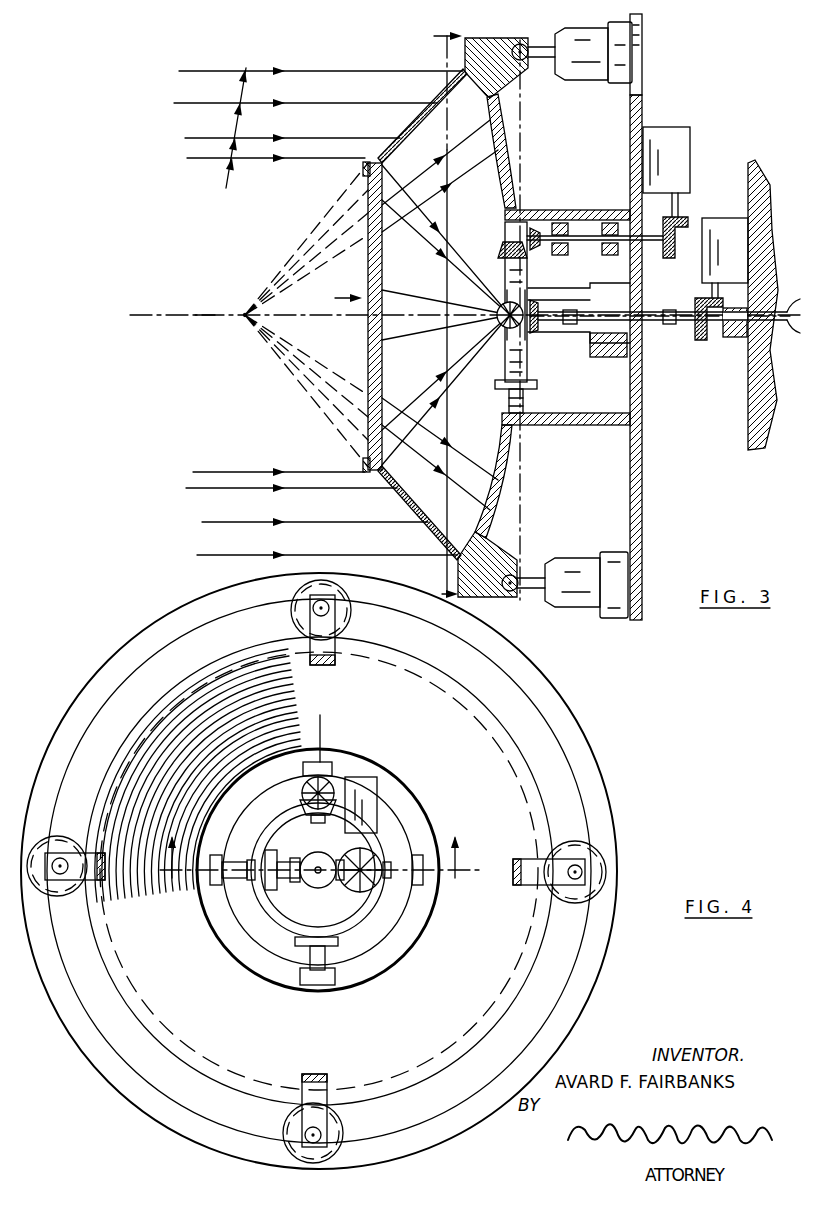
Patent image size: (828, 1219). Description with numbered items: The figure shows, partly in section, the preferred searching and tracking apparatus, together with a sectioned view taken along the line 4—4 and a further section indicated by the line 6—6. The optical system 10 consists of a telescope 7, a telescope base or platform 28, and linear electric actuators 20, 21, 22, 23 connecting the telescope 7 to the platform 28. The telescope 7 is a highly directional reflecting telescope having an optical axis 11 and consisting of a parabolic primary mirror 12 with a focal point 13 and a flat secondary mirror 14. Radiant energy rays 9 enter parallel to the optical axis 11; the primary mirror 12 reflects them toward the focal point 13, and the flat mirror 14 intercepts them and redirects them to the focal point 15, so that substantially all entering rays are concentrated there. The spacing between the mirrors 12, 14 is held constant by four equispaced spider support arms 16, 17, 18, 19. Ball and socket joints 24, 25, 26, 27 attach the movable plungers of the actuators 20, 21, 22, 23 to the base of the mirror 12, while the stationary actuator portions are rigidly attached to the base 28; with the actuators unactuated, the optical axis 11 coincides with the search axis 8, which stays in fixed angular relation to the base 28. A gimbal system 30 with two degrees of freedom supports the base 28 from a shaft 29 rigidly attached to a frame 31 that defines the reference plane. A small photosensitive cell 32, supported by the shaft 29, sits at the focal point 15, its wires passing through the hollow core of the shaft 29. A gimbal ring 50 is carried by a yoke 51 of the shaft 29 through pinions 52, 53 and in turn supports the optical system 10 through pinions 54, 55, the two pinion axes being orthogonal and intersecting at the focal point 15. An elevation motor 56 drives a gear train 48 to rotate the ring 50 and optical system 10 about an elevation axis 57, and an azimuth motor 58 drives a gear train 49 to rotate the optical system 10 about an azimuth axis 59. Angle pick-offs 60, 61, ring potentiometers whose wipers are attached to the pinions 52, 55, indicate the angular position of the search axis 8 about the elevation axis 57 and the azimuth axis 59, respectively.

In FIG. 3, the section line 4— 4 is at (422, 47).
In FIG. 4, the section line 6— 6 is at (177, 896).
In FIG. 3, the telescope 7 is at (338, 298).
In FIG. 3, the search axis 8 is at (149, 311).
In FIG. 3, the radiant energy rays 9 is at (318, 313).
In FIG. 3, the optical system 10 is at (508, 506).
In FIG. 3, the optical axis 11 is at (205, 321).
In FIG. 3, the parabolic primary mirror 12 is at (511, 468).
In FIG. 4, the parabolic primary mirror 12 is at (486, 797).
In FIG. 3, the focal point 13 is at (243, 311).
In FIG. 3, the flat secondary mirror 14 is at (385, 306).
In FIG. 3, the focal point 15 is at (539, 300).
In FIG. 4, the focal point 15 is at (322, 862).
In FIG. 3, the spider support arm 16 is at (446, 96).
In FIG. 4, the spider support arm 16 is at (332, 660).
In FIG. 4, the spider support arm 17 is at (101, 885).
In FIG. 3, the spider support arm 18 is at (434, 545).
In FIG. 4, the spider support arm 18 is at (322, 1085).
In FIG. 4, the spider support arm 19 is at (520, 884).
In FIG. 3, the linear electric actuator 20 is at (600, 76).
In FIG. 4, the linear electric actuator 20 is at (298, 599).
In FIG. 4, the linear electric actuator 21 is at (50, 832).
In FIG. 3, the linear electric actuator 22 is at (590, 606).
In FIG. 4, the linear electric actuator 22 is at (340, 1152).
In FIG. 4, the linear electric actuator 23 is at (603, 858).
In FIG. 3, the ball and socket joint 24 is at (518, 43).
In FIG. 4, the ball and socket joint 24 is at (331, 608).
In FIG. 4, the ball and socket joint 25 is at (48, 888).
In FIG. 3, the ball and socket joint 26 is at (512, 592).
In FIG. 4, the ball and socket joint 26 is at (325, 1138).
In FIG. 4, the ball and socket joint 27 is at (586, 878).
In FIG. 3, the telescope base 28 is at (644, 100).
In FIG. 4, the telescope base 28 is at (598, 970).
In FIG. 3, the shaft 29 is at (655, 308).
In FIG. 4, the shaft 29 is at (330, 884).
In FIG. 3, the gimbal system 30 is at (540, 363).
In FIG. 4, the gimbal system 30 is at (396, 925).
In FIG. 3, the frame 31 is at (760, 164).
In FIG. 3, the photosensitive cell 32 is at (499, 319).
In FIG. 4, the photosensitive cell 32 is at (312, 880).
In FIG. 3, the gear train 48 is at (709, 358).
In FIG. 4, the gear train 48 is at (365, 860).
In FIG. 3, the gear train 49 is at (683, 260).
In FIG. 4, the gear train 49 is at (305, 785).
In FIG. 3, the gimbal ring 50 is at (510, 350).
In FIG. 4, the gimbal ring 50 is at (283, 906).
In FIG. 4, the yoke 51 is at (307, 858).
In FIG. 4, the pinion 52 is at (266, 860).
In FIG. 4, the pinion 53 is at (370, 884).
In FIG. 3, the pinion 54 is at (503, 241).
In FIG. 4, the pinion 54 is at (332, 768).
In FIG. 3, the pinion 55 is at (508, 402).
In FIG. 4, the pinion 55 is at (327, 958).
In FIG. 3, the elevation motor 56 is at (712, 220).
In FIG. 4, the elevation motor 56 is at (377, 800).
In FIG. 4, the elevation axis 57 is at (456, 866).
In FIG. 3, the azimuth motor 58 is at (682, 140).
In FIG. 3, the azimuth axis 59 is at (524, 176).
In FIG. 4, the azimuth axis 59 is at (330, 730).
In FIG. 4, the angle pick-off 60 is at (288, 855).
In FIG. 3, the angle pick-off 61 is at (538, 386).
In FIG. 4, the angle pick-off 61 is at (297, 940).